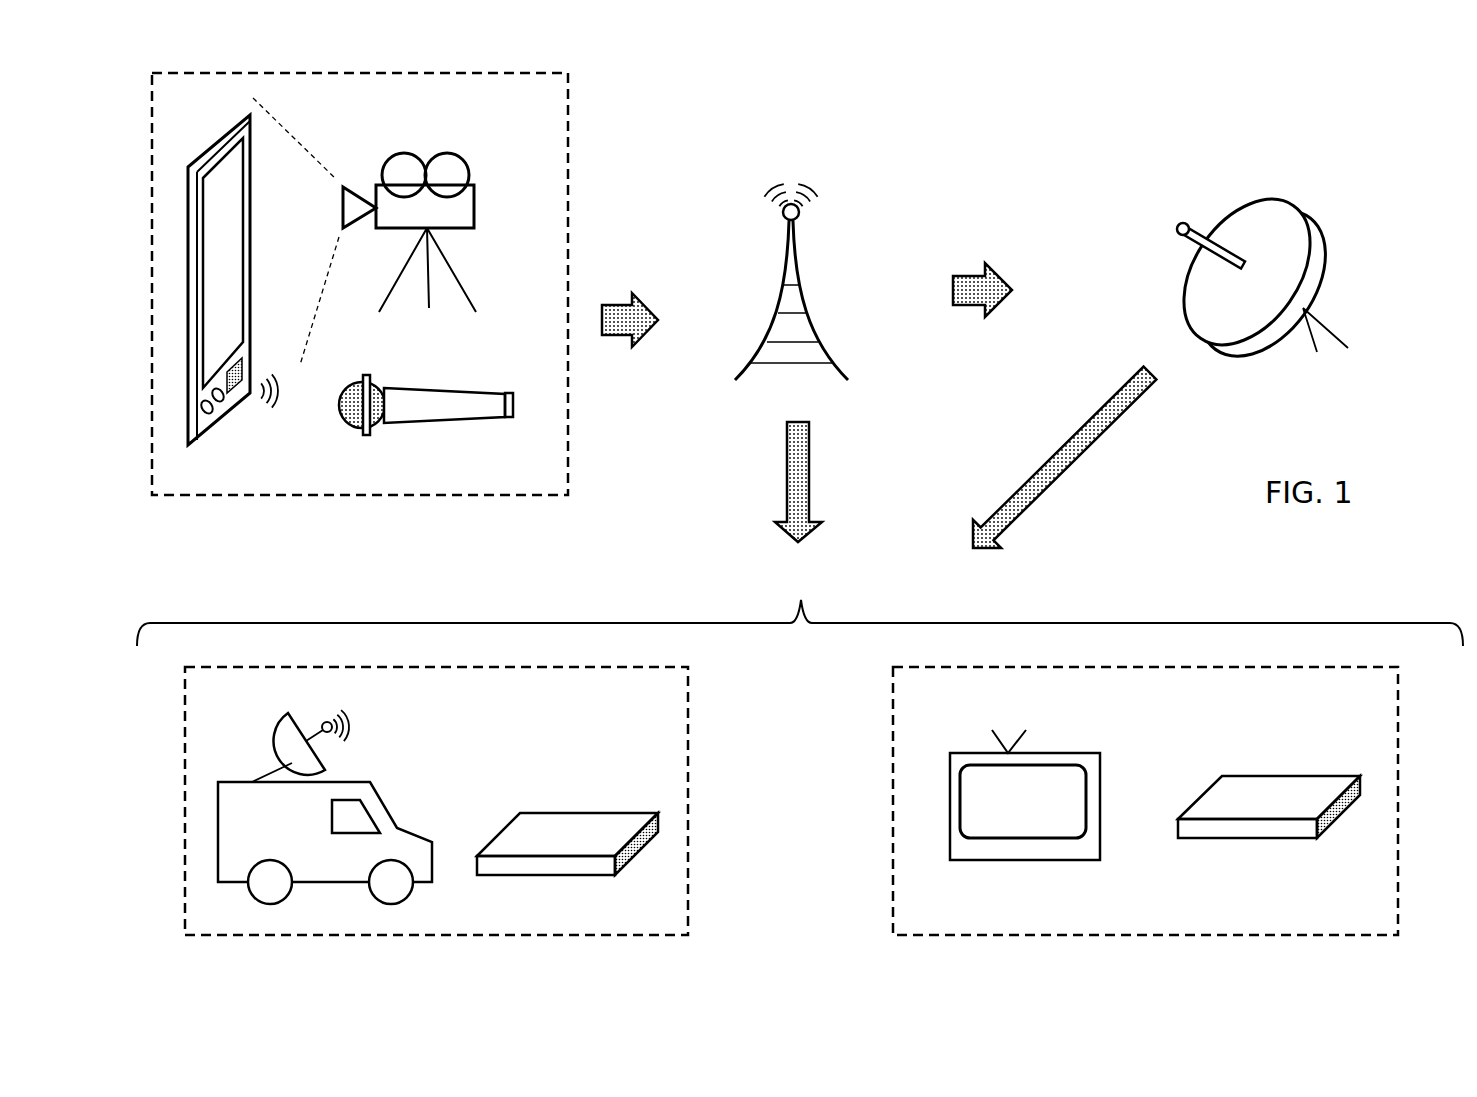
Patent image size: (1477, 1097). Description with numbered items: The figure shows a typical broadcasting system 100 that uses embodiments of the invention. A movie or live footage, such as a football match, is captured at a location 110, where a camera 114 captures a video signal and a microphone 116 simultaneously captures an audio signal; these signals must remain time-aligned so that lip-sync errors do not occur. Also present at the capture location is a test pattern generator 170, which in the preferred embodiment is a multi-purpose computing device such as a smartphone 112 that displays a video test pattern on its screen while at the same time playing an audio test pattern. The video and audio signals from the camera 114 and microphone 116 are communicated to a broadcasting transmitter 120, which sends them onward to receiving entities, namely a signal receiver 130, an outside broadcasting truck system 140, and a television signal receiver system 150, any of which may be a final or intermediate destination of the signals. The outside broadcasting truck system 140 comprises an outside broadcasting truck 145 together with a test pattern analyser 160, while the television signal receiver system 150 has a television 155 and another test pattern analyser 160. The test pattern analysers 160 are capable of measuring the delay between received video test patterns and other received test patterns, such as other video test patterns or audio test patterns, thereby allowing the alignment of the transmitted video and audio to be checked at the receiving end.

The broadcasting system 100 is at (1207, 100).
The location 110 is at (568, 133).
The smartphone 112 is at (218, 266).
The camera 114 is at (477, 210).
The microphone 116 is at (492, 418).
The broadcasting transmitter 120 is at (820, 333).
The signal receiver 130 is at (1330, 243).
The outside broadcasting truck system 140 is at (688, 735).
The outside broadcasting truck 145 is at (387, 807).
The television signal receiver system 150 is at (1398, 780).
The television 155 is at (1097, 773).
The test pattern analyser 160 is at (565, 822).
The test pattern generator 170 is at (222, 272).